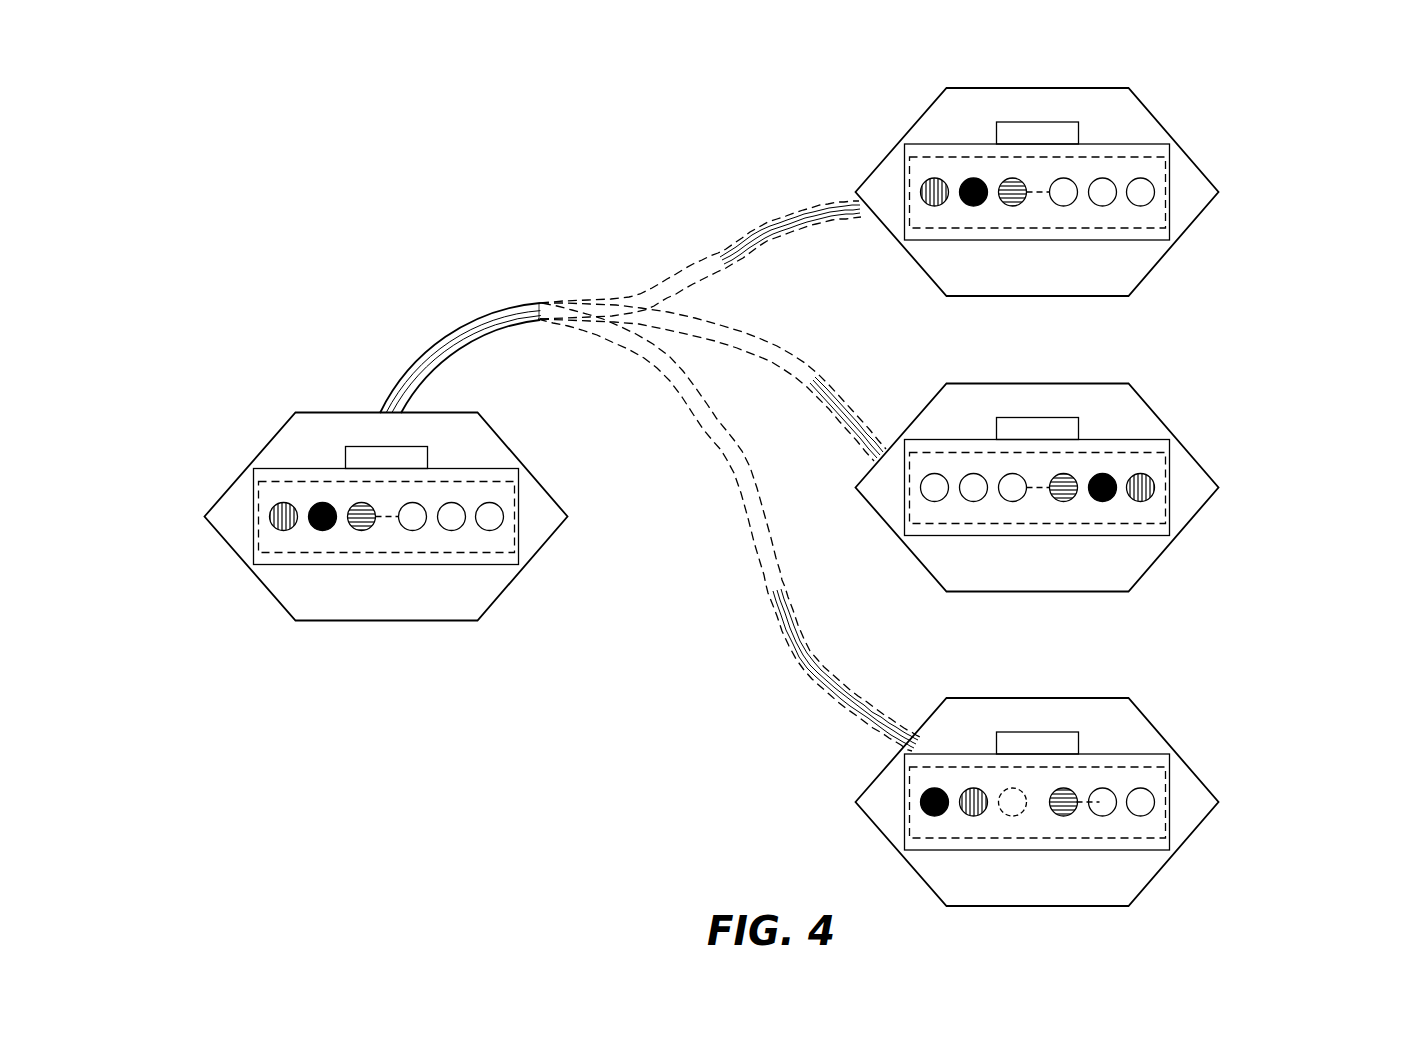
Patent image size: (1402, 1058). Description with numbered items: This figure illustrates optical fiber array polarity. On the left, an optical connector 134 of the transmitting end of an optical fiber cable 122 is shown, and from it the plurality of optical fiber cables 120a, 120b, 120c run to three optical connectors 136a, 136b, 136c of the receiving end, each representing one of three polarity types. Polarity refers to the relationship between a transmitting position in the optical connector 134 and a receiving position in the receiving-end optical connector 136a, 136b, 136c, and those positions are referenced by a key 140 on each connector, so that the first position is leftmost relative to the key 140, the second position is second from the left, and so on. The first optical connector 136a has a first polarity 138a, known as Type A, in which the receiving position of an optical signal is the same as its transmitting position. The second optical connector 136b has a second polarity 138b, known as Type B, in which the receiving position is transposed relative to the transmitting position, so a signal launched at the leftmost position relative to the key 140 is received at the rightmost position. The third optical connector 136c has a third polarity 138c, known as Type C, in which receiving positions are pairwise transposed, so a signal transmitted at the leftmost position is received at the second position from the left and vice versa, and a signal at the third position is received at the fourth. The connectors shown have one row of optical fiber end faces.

The optical fiber cable 120a is at (387, 403).
The optical fiber cable 120b is at (447, 340).
The optical fiber cable 120c is at (430, 363).
The optical fiber cable 122 is at (522, 300).
The optical connector 134 is at (433, 620).
The first optical connector 136a is at (1203, 210).
The second optical connector 136b is at (1203, 506).
The third optical connector 136c is at (1203, 820).
The first polarity 138a is at (1093, 177).
The second polarity 138b is at (1093, 473).
The third polarity 138c is at (1093, 787).
The key 140 is at (358, 447).